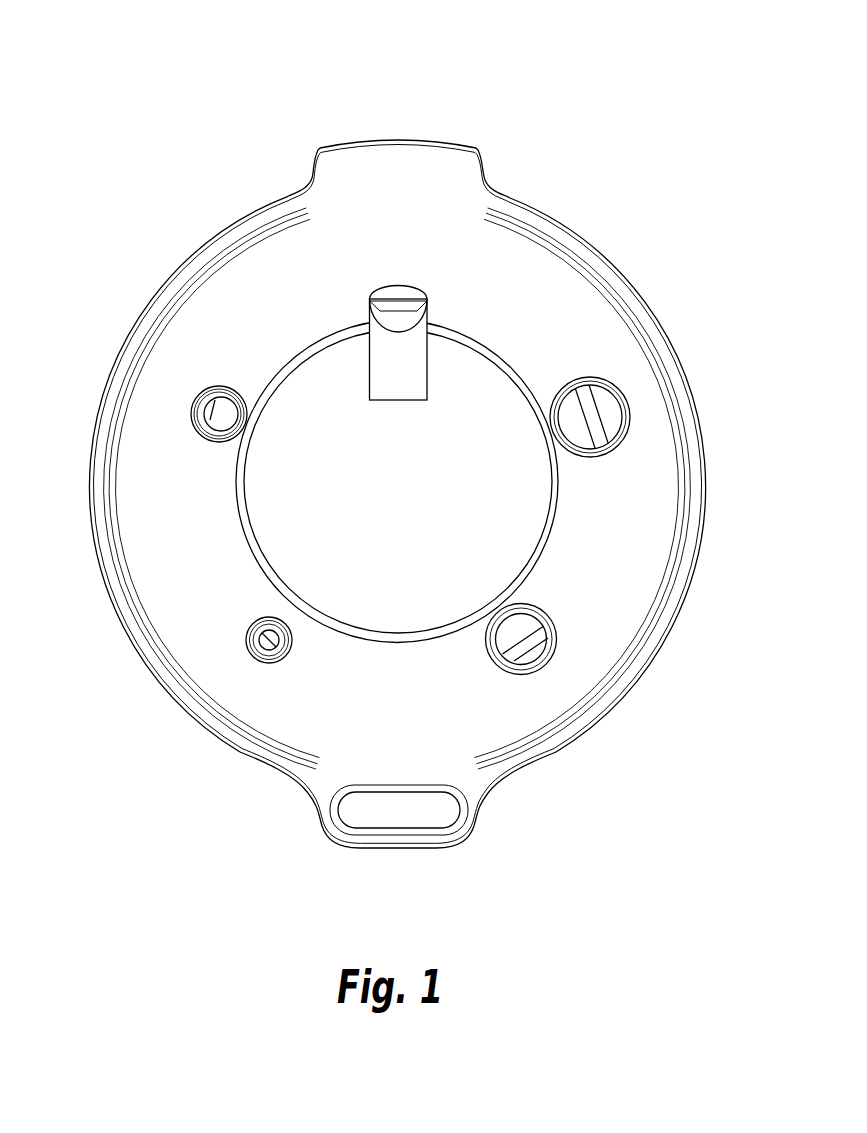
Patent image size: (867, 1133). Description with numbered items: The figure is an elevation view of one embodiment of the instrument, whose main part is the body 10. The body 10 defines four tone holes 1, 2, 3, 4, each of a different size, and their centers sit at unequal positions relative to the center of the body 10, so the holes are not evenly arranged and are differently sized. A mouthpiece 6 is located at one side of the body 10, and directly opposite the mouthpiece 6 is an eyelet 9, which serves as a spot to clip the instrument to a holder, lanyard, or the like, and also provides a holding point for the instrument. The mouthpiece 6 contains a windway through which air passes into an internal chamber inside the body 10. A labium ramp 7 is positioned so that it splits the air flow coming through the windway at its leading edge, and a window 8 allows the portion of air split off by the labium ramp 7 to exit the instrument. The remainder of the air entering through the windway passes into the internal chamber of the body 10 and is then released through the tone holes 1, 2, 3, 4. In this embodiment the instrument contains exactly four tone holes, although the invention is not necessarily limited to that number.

The tone hole 1 is at (193, 404).
The tone hole 2 is at (631, 416).
The tone hole 3 is at (553, 657).
The tone hole 4 is at (247, 647).
The mouthpiece 6 is at (413, 139).
The labium ramp 7 is at (407, 370).
The window 8 is at (405, 316).
The eyelet 9 is at (347, 827).
The body 10 is at (627, 575).